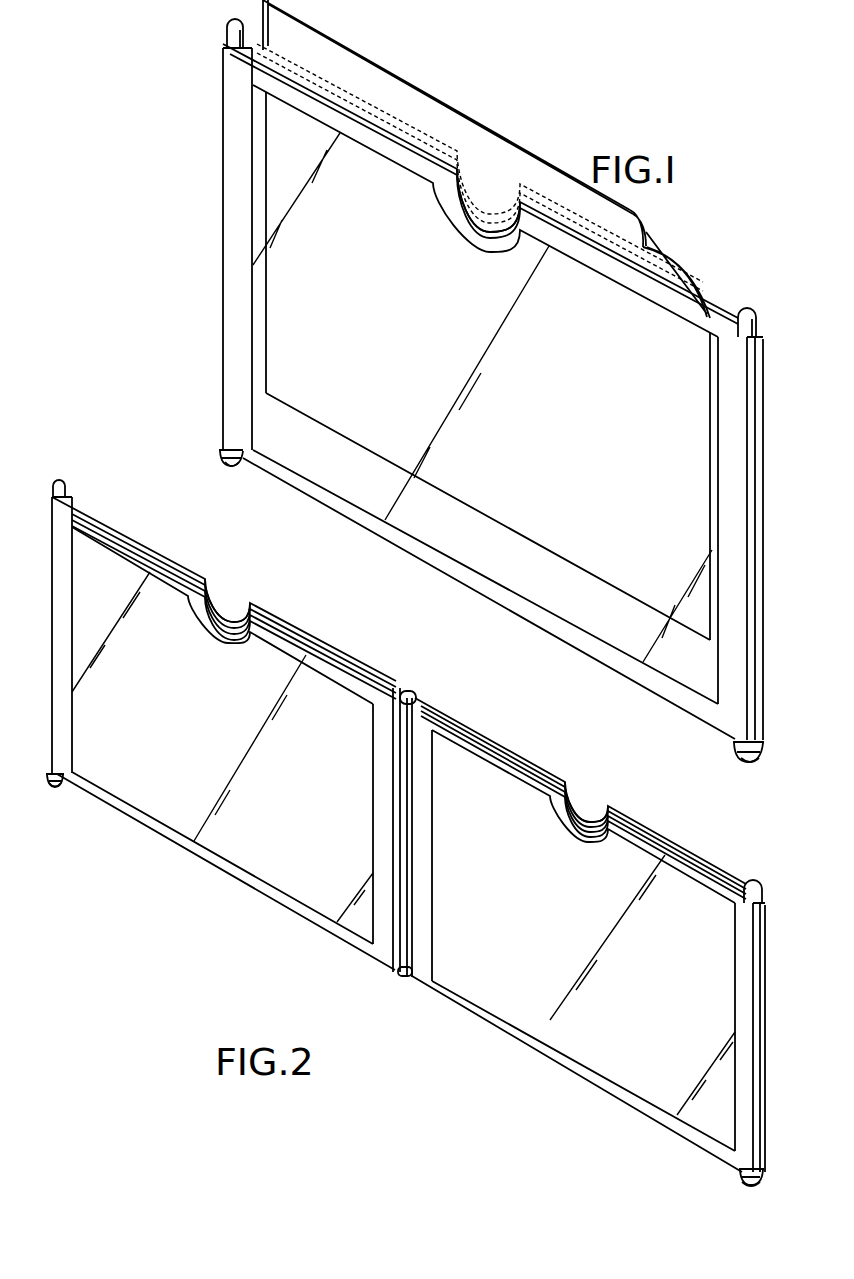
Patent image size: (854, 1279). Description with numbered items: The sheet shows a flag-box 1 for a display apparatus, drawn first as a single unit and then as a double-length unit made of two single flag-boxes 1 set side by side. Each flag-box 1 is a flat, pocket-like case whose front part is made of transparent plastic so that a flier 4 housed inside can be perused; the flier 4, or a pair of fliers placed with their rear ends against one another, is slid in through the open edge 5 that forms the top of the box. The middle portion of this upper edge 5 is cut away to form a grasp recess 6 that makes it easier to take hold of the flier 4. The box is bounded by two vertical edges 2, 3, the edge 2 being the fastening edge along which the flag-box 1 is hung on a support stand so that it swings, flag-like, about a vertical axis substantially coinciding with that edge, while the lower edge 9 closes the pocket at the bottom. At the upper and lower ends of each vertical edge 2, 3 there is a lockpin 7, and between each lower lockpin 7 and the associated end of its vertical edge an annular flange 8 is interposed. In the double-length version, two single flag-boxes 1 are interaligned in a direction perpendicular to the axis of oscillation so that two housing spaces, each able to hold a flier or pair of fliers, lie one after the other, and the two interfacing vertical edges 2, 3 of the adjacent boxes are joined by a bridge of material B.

In FIG. 1, the flag-box 1 is at (228, 258).
In FIG. 2, the flag-box 1 is at (178, 851).
In FIG. 1, the vertical edge 2 is at (222, 168).
In FIG. 2, the vertical edge 2 is at (54, 660).
In FIG. 1, the vertical edge 3 is at (757, 522).
In FIG. 2, the vertical edge 3 is at (382, 946).
In FIG. 1, the flier 4 is at (545, 172).
In FIG. 1, the open edge 5 is at (702, 308).
In FIG. 2, the open edge 5 is at (328, 667).
In FIG. 1, the grasp recess 6 is at (470, 220).
In FIG. 2, the grasp recess 6 is at (213, 612).
In FIG. 1, the lockpin 7 is at (232, 32).
In FIG. 2, the lockpin 7 is at (66, 490).
In FIG. 1, the foot glide 8 is at (227, 452).
In FIG. 2, the foot glide 8 is at (48, 776).
In FIG. 1, the bottom rail 9 is at (436, 563).
In FIG. 2, the bottom rail 9 is at (238, 879).
In FIG. 2, the bridge of material B is at (403, 968).